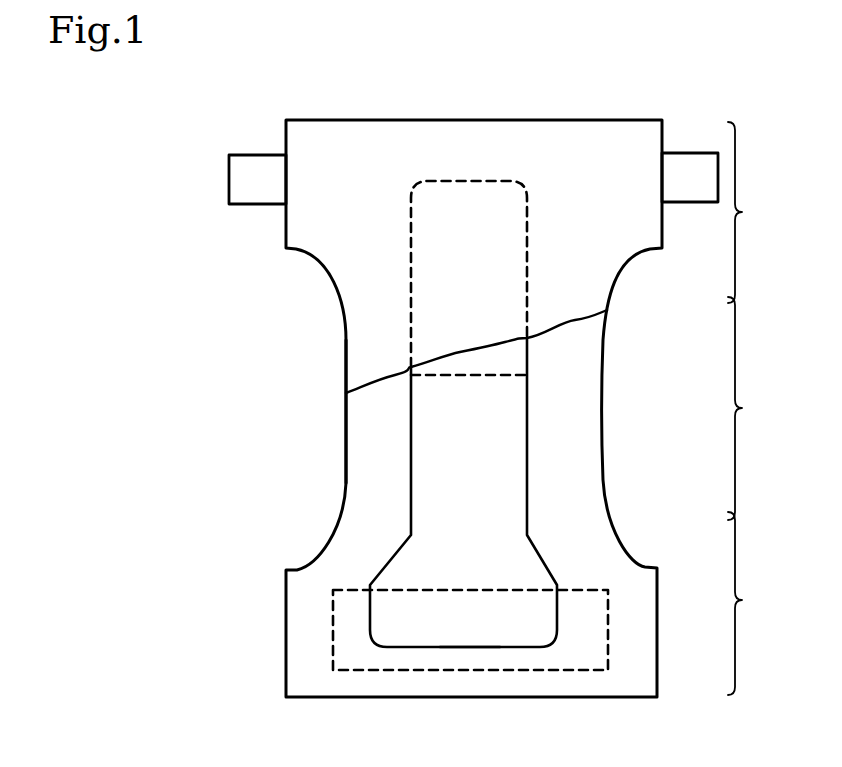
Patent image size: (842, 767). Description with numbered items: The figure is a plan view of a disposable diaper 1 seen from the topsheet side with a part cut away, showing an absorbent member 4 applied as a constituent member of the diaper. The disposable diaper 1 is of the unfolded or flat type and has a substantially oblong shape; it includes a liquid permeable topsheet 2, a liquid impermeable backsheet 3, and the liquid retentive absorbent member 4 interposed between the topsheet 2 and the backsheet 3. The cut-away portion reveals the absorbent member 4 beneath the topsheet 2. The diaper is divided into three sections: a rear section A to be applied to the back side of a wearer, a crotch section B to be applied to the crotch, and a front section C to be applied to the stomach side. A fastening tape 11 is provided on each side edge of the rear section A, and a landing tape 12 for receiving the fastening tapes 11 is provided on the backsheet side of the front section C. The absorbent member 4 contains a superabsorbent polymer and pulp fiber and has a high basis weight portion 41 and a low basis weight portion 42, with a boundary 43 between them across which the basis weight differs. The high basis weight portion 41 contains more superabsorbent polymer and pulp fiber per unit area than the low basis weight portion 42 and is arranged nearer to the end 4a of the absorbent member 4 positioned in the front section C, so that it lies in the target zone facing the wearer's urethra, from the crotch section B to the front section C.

The disposable diaper 1 is at (238, 106).
The fastening tape 11 is at (232, 186).
The topsheet 2 is at (352, 344).
The backsheet 3 is at (362, 428).
The absorbent member 4 is at (429, 463).
The high basis weight portion 41 is at (463, 492).
The low basis weight portion 42 is at (481, 360).
The boundary 43 is at (482, 376).
The end of the absorbent member 4a is at (463, 648).
The landing tape 12 is at (333, 633).
The rear section A is at (748, 212).
The crotch section B is at (746, 408).
The front section C is at (746, 603).